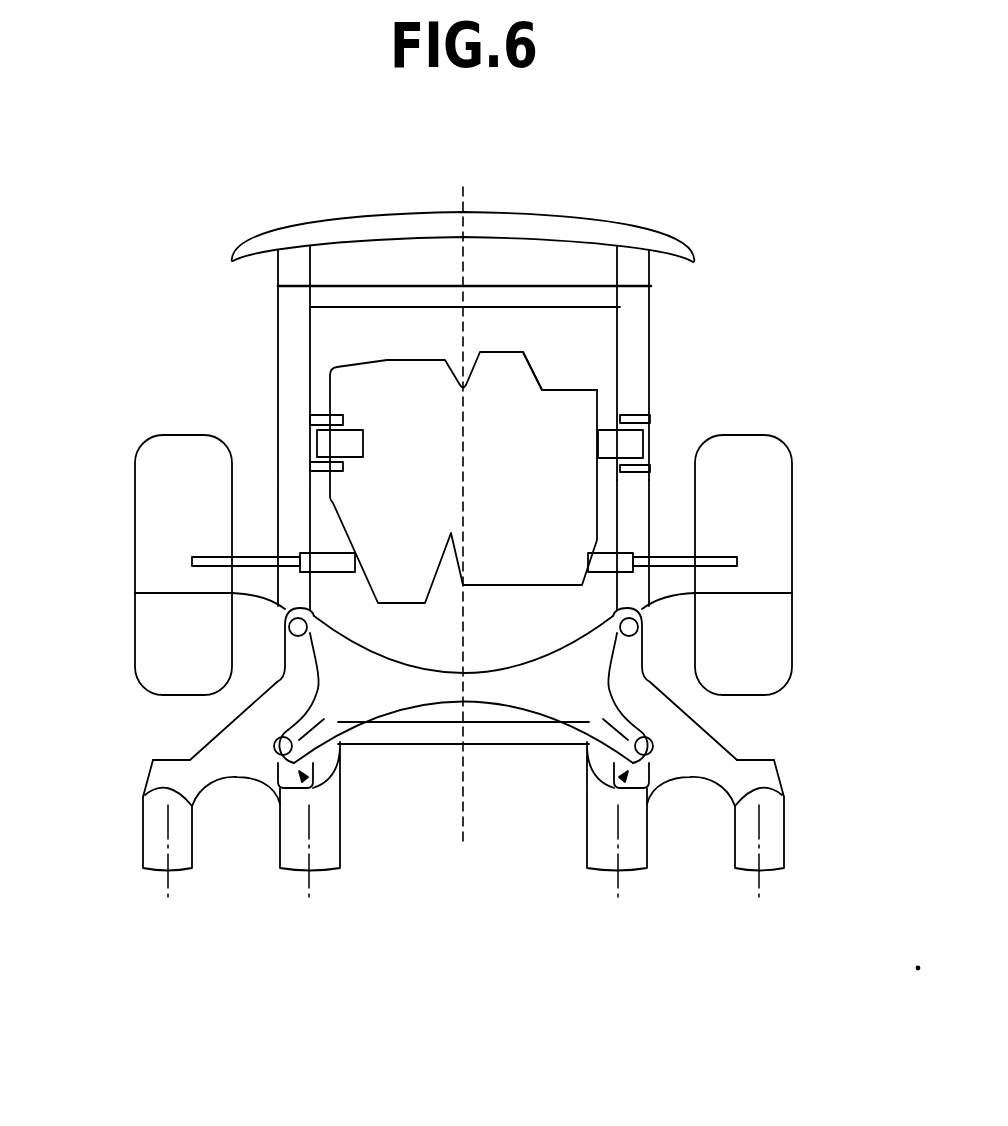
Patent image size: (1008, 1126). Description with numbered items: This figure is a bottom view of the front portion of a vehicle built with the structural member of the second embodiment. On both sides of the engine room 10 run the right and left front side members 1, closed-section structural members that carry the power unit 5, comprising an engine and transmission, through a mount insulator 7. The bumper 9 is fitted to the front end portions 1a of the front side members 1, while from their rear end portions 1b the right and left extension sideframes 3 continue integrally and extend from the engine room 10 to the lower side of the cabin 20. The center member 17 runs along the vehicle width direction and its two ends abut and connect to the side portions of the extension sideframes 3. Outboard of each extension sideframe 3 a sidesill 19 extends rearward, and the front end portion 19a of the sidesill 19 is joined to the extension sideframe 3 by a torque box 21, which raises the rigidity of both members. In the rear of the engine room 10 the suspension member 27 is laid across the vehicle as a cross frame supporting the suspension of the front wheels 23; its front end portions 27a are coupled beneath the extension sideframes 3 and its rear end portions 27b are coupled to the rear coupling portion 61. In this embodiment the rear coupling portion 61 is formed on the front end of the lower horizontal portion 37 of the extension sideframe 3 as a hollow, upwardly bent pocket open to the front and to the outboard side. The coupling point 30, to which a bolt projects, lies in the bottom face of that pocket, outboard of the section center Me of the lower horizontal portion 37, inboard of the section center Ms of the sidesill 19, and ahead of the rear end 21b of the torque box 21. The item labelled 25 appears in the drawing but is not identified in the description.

The front side member 1 is at (278, 323).
The front end portion of the front side member 1a is at (295, 247).
The rear end portion of the front side member 1b is at (280, 522).
The extension sideframe 3 is at (278, 683).
The power unit 5 is at (567, 388).
The mount insulator 7 is at (322, 440).
The bumper 9 is at (568, 213).
The engine room 10 is at (394, 350).
The center member 17 is at (495, 740).
The sidesill 19 is at (148, 850).
The front end portion of the sidesill 19a is at (160, 758).
The cabin 20 is at (440, 864).
The torque box 21 is at (220, 778).
The rear end of the torque box 21b is at (143, 793).
The front wheel 23 is at (134, 511).
The pivot boss 25 is at (188, 735).
The suspension member 27 is at (424, 680).
The front end portion of the suspension member 27a is at (135, 593).
The rear end portion of the suspension member 27b is at (262, 755).
The coupling point 30 is at (267, 738).
The lower horizontal portion 37 is at (338, 810).
The rear coupling portion 61 is at (303, 778).
The center of a section of the sidesill Ms is at (167, 882).
The center of a section of the extension sideframe Me is at (304, 880).